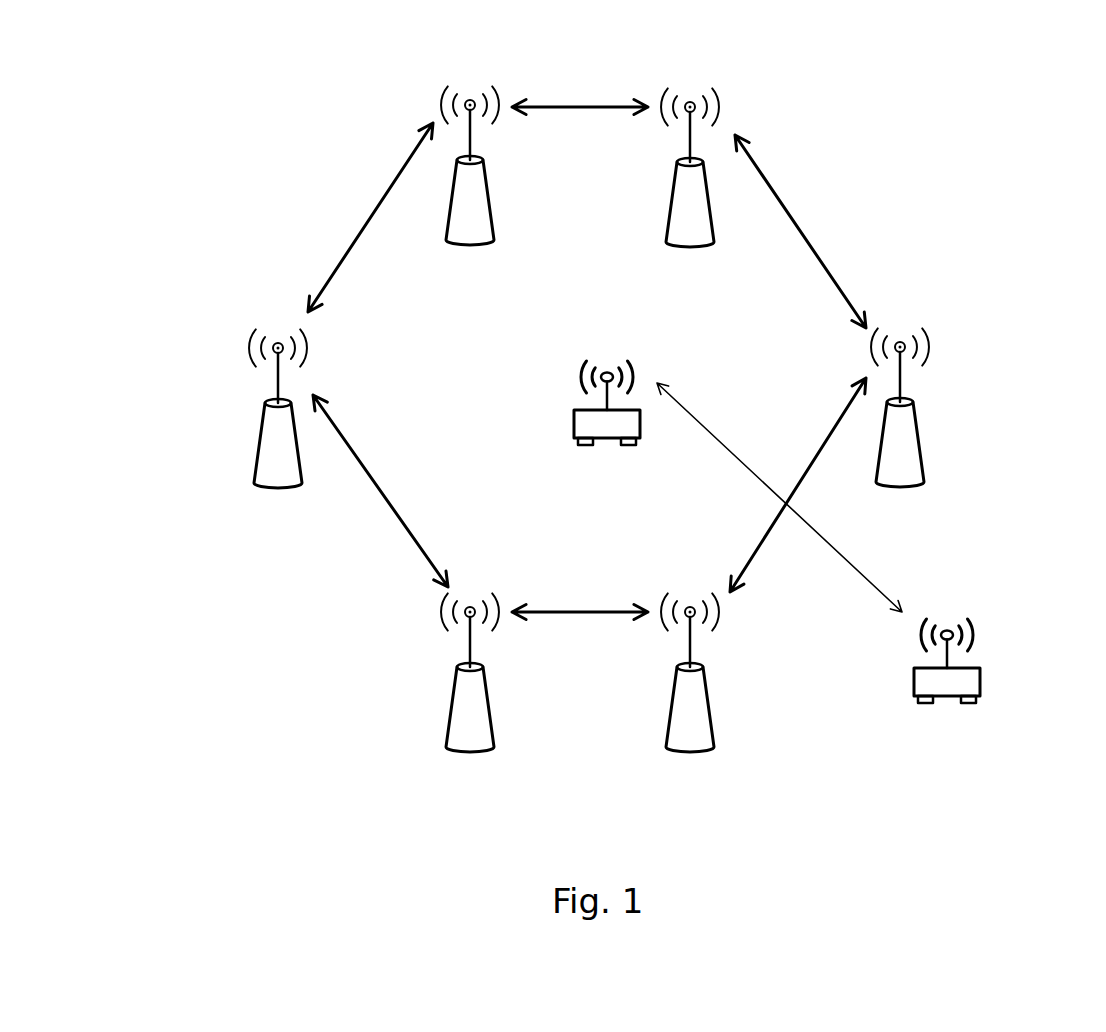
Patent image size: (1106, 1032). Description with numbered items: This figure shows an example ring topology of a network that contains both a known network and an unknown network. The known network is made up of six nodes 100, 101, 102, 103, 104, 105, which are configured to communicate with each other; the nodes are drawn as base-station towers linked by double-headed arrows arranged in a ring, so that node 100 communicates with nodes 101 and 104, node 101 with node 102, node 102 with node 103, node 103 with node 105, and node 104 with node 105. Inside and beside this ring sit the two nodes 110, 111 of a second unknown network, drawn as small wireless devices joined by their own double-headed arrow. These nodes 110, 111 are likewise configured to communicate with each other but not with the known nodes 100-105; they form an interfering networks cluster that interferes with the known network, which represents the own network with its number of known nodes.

The node of the known network 100 is at (234, 400).
The node of the known network 101 is at (434, 62).
The node of the known network 102 is at (750, 90).
The node of the known network 103 is at (947, 310).
The node of the known network 104 is at (419, 712).
The node of the known network 105 is at (736, 698).
The node of the unknown network 110 is at (546, 376).
The node of the unknown network 111 is at (1013, 605).